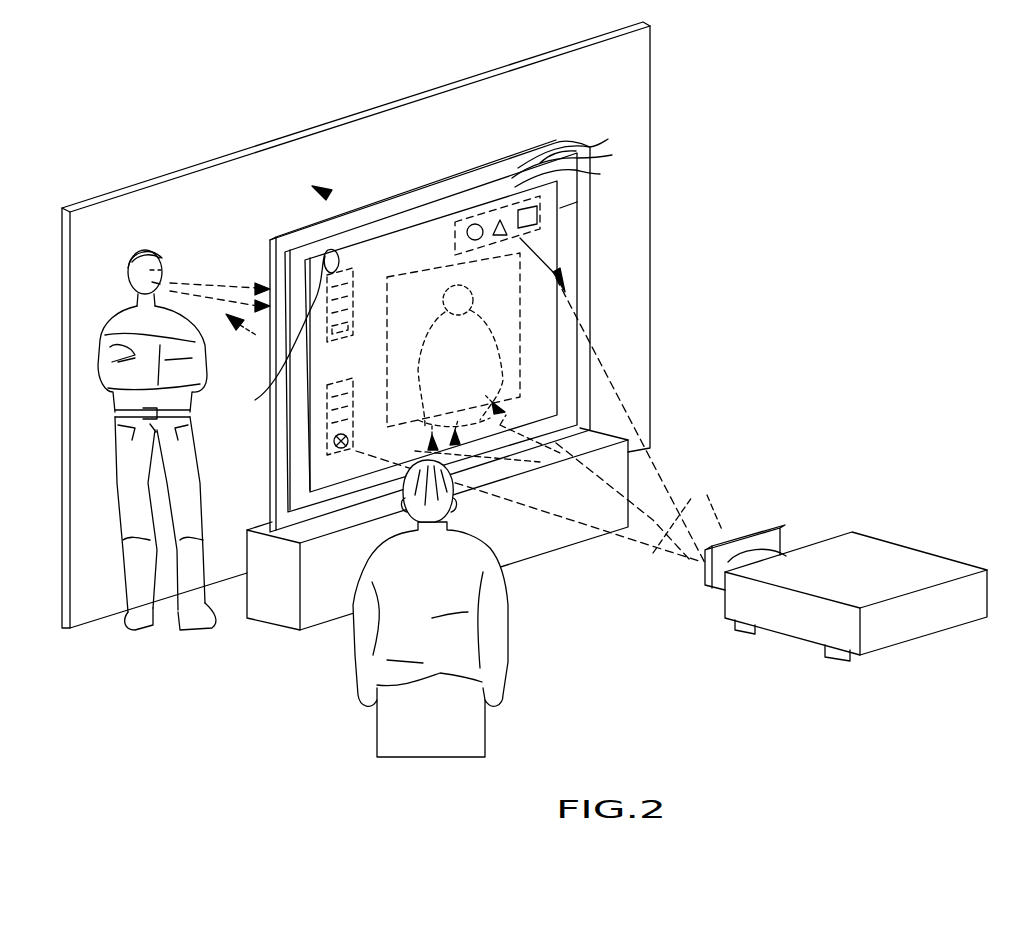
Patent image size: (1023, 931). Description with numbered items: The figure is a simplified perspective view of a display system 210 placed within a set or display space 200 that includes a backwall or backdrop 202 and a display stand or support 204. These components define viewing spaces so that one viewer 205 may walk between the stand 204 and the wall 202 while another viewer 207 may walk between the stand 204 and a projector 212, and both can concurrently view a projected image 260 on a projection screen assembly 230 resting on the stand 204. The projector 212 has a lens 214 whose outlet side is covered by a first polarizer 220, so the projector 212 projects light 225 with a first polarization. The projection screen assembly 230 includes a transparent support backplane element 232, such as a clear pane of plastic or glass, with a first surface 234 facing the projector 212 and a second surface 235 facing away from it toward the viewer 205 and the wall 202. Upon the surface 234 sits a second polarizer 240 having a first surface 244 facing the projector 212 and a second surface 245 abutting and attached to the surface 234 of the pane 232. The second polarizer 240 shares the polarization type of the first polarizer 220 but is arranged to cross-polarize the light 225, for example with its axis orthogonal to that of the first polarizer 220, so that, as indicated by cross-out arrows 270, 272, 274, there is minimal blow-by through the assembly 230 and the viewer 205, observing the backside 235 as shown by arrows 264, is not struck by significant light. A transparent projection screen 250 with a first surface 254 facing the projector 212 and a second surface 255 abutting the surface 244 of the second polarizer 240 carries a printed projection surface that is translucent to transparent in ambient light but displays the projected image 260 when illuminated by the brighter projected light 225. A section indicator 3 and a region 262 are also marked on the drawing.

The display space 200 is at (776, 126).
The backwall 202 is at (652, 352).
The display stand 204 is at (605, 442).
The viewer 205 is at (130, 483).
The viewer 207 is at (357, 643).
The display system 210 is at (559, 632).
The projector 212 is at (783, 624).
The lens 214 is at (772, 550).
The first polarizer 220 is at (706, 575).
The light 225 is at (724, 488).
The projection screen assembly 230 is at (625, 296).
The support backplane element 232 is at (608, 139).
The first surface 234 is at (587, 150).
The second surface 235 is at (612, 155).
The second polarizer 240 is at (598, 232).
The first surface 244 is at (577, 202).
The second surface 245 is at (600, 174).
The transparent projection screen 250 is at (283, 444).
The first surface 254 is at (312, 490).
The second surface 255 is at (283, 335).
The projected image 260 is at (356, 274).
The display region 262 is at (510, 477).
The arrows 264 is at (203, 280).
The cross-out arrows 270 is at (240, 340).
The cross-out arrows 272 is at (348, 204).
The cross-out arrows 274 is at (478, 162).
The section line 3 is at (439, 180).